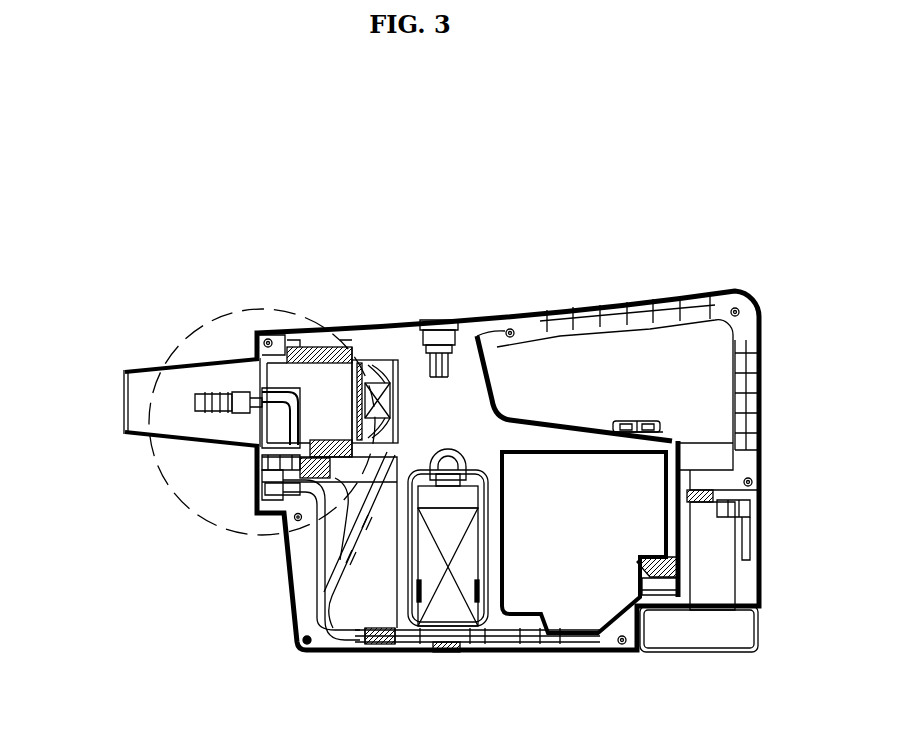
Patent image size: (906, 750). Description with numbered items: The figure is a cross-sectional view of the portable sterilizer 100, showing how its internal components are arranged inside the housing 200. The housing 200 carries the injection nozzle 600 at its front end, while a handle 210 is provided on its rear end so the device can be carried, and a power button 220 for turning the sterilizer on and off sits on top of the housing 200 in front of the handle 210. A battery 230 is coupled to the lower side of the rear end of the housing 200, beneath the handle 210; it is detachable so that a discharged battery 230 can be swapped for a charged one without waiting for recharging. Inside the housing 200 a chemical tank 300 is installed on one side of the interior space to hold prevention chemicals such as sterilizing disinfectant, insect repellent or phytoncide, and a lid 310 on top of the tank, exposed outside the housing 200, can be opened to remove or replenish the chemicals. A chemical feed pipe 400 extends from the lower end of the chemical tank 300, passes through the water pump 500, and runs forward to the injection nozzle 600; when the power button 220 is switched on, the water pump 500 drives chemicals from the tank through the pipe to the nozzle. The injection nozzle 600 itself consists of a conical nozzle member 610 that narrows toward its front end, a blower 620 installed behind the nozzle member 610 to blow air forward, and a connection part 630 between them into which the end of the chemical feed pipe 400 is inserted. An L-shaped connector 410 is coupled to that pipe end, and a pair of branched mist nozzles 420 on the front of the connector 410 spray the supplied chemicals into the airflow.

The portable sterilizer 100 is at (102, 102).
The housing 200 is at (282, 576).
The handle 210 is at (666, 307).
The power button 220 is at (440, 323).
The battery 230 is at (713, 590).
The chemical tank 300 is at (578, 577).
The lid 310 is at (640, 418).
The chemical feed pipe 400 is at (334, 588).
The connector 410 is at (258, 447).
The mist nozzles 420 is at (177, 372).
The water pump 500 is at (448, 604).
The injection nozzle 600 is at (125, 438).
The nozzle member 610 is at (197, 397).
The blower 620 is at (371, 362).
The connection part 630 is at (312, 350).